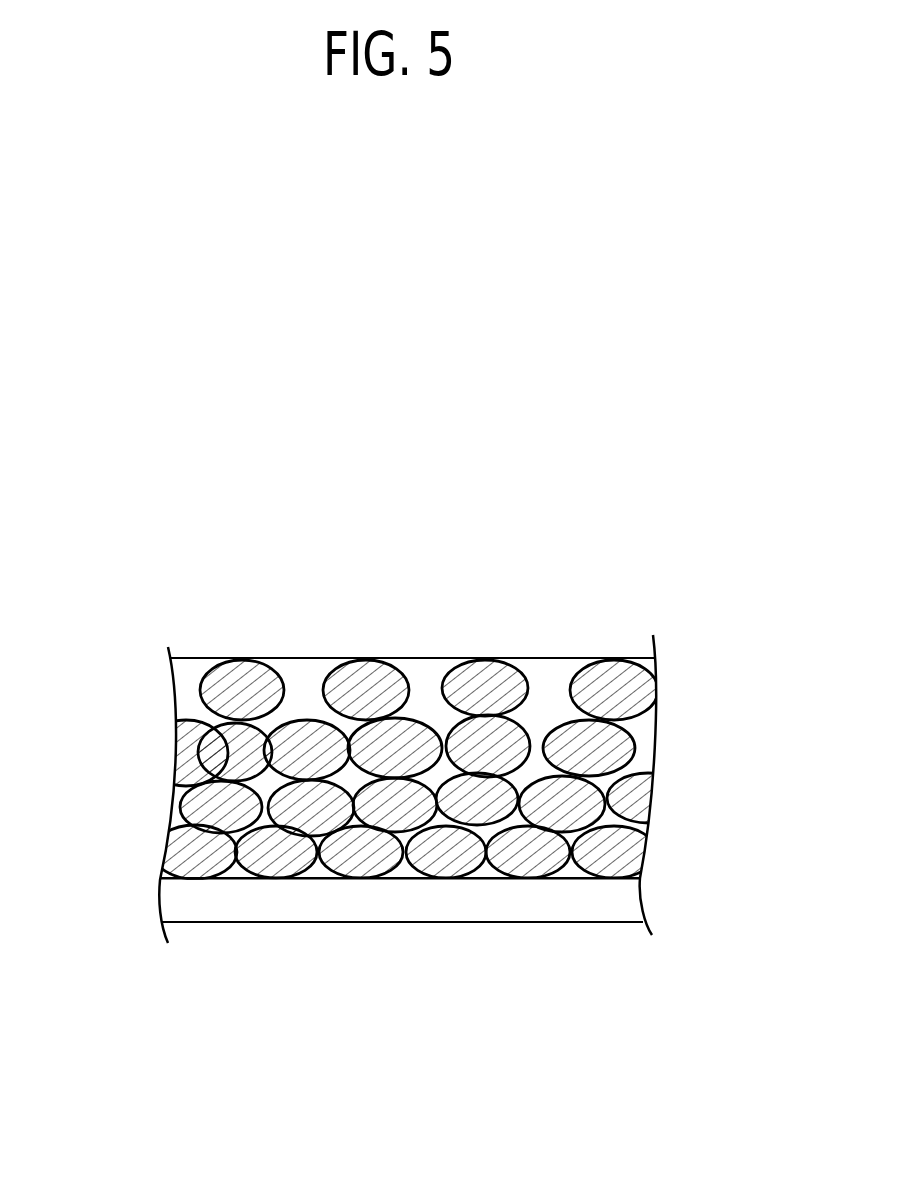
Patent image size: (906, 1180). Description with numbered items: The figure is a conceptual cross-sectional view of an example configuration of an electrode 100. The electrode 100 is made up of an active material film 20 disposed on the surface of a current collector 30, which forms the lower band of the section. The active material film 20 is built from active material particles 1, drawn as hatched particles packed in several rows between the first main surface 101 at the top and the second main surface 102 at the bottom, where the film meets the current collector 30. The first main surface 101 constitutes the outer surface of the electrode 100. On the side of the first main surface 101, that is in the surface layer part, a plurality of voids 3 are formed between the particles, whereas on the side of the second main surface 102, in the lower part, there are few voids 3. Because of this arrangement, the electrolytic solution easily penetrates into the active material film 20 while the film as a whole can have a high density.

The electrode 100 is at (165, 568).
The active material film 20 is at (110, 655).
The current collector 30 is at (185, 897).
The active material particles 1 is at (183, 757).
The voids 3 is at (308, 678).
The first main surface 101 is at (633, 664).
The second main surface 102 is at (635, 878).